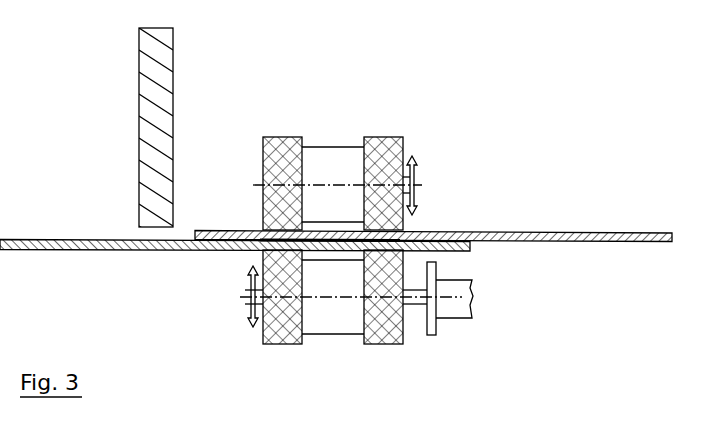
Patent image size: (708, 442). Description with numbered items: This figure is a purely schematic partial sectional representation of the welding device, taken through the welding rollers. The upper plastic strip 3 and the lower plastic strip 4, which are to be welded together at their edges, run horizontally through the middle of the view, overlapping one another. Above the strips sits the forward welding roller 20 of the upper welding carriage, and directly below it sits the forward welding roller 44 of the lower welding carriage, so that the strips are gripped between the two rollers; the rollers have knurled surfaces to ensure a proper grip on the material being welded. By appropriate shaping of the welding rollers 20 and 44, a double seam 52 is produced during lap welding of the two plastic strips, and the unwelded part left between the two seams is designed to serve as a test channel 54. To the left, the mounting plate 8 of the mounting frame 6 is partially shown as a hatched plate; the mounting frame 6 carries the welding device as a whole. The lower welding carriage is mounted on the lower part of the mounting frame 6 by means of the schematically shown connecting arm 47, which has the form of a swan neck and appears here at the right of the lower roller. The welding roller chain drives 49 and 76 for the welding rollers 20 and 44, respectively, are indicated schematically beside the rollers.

The mounting frame 6 is at (88, 101).
The mounting plate 8 is at (157, 72).
The upper plastic strip 3 is at (592, 232).
The lower plastic strip 4 is at (121, 250).
The forward welding roller 20 is at (283, 155).
The double seam 52 is at (373, 233).
The welding roller chain drive 49 is at (412, 158).
The forward welding roller 44 is at (281, 322).
The test channel 54 is at (331, 240).
The welding roller chain drive 76 is at (252, 330).
The connecting arm 47 is at (454, 307).